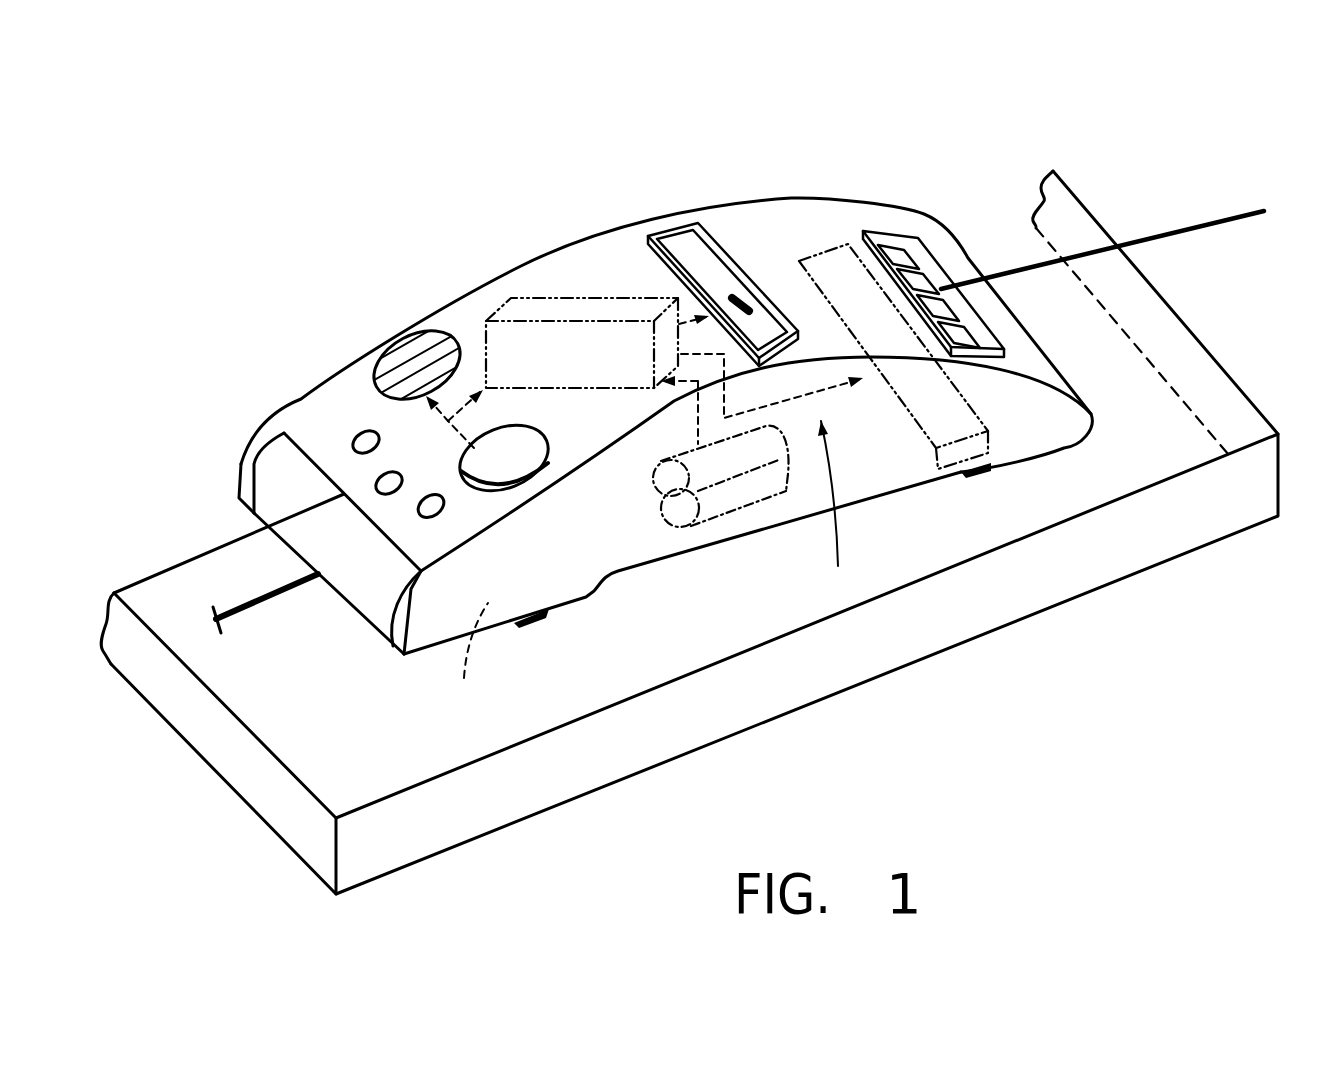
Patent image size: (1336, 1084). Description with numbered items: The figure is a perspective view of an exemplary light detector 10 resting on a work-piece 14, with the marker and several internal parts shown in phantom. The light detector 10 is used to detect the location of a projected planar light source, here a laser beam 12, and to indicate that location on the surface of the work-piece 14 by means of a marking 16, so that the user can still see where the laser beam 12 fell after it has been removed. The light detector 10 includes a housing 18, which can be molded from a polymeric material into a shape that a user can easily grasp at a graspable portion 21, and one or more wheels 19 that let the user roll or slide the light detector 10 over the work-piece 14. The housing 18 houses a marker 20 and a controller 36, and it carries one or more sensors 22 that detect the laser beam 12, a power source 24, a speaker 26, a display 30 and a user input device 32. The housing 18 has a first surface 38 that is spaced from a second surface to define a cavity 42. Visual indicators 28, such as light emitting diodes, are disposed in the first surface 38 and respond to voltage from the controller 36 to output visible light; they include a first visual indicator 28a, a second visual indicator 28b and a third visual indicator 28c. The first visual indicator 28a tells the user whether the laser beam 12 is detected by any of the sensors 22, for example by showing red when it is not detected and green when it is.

The light detector 10 is at (665, 374).
The laser beam 12 is at (1173, 227).
The work-piece 14 is at (862, 688).
The marking 16 is at (250, 608).
The housing 18 is at (665, 374).
The wheels 19 is at (540, 622).
The marker 20 is at (912, 466).
The graspable portion 21 is at (848, 511).
The sensors 22 is at (868, 227).
The power source 24 is at (720, 513).
The speaker 26 is at (400, 333).
The visual indicators 28 is at (299, 500).
The first visual indicator 28a is at (353, 435).
The second visual indicator 28b is at (377, 480).
The third visual indicator 28c is at (428, 517).
The display 30 is at (677, 227).
The user input device 32 is at (518, 460).
The controller 36 is at (510, 297).
The first surface 38 is at (580, 243).
The cavity 42 is at (484, 657).